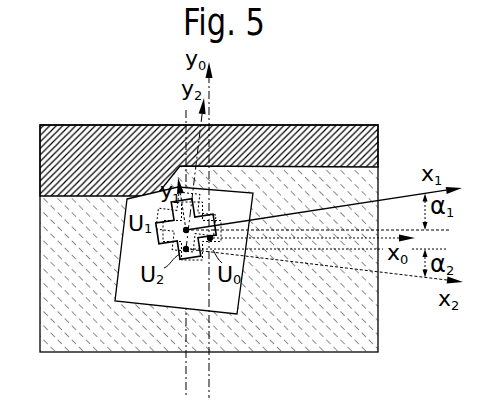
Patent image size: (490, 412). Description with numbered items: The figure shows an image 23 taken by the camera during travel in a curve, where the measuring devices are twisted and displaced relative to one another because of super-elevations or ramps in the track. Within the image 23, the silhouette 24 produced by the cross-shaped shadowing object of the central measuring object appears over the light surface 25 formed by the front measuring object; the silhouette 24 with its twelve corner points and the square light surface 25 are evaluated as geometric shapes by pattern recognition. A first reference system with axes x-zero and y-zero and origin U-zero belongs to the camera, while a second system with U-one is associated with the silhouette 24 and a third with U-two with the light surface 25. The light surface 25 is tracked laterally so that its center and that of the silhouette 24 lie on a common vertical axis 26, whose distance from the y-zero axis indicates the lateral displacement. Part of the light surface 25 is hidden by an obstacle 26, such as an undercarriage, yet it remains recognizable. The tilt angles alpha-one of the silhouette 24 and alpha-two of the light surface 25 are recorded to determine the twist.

The image 23 is at (148, 125).
The silhouette 24 is at (150, 247).
The light surface 25 is at (250, 290).
The obstacle 26 is at (40, 221).